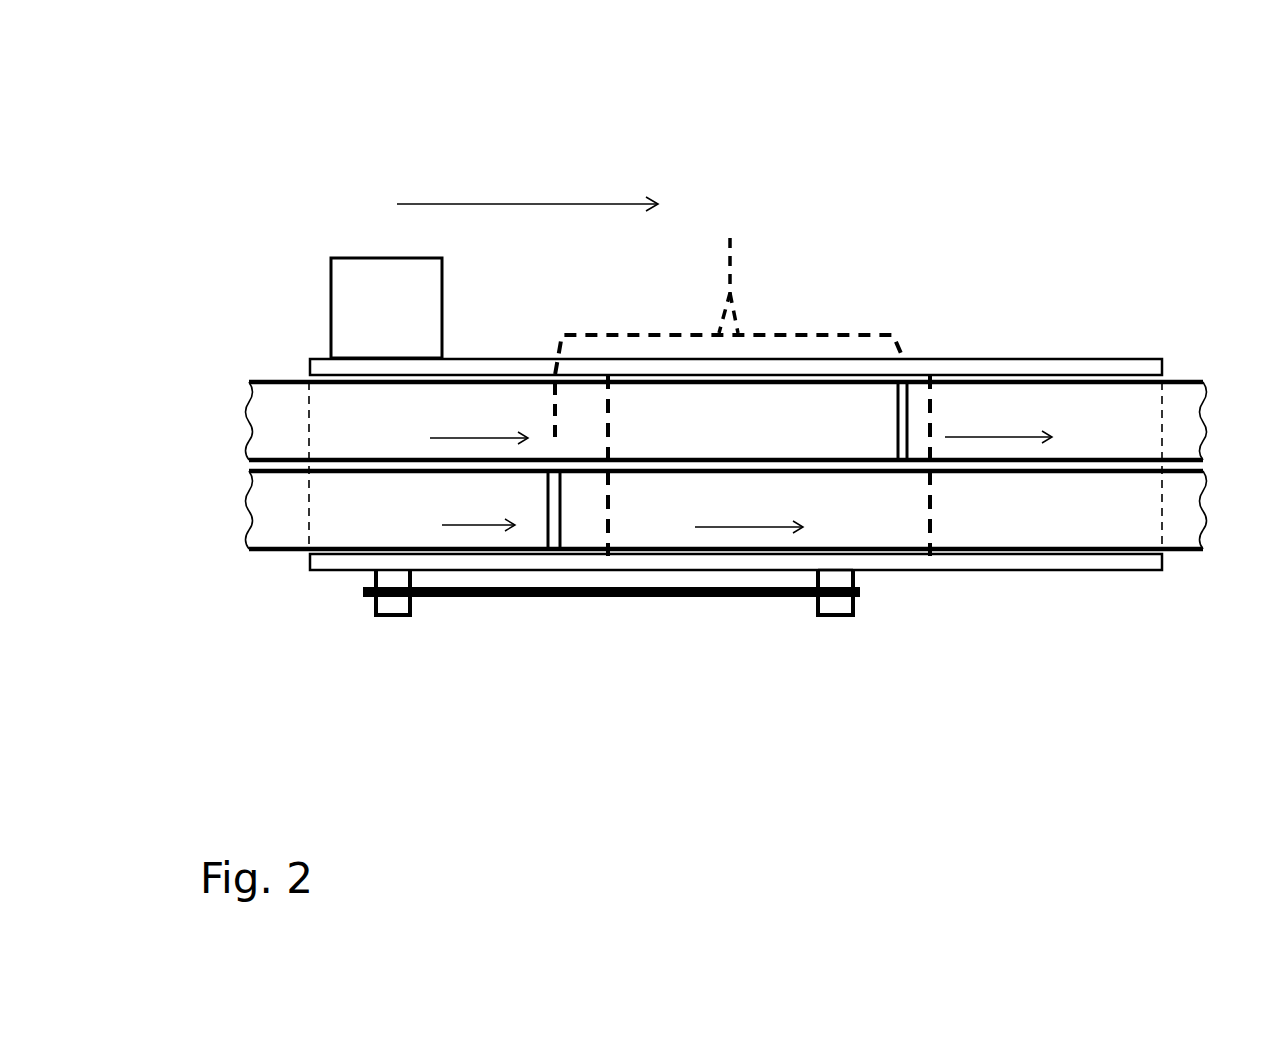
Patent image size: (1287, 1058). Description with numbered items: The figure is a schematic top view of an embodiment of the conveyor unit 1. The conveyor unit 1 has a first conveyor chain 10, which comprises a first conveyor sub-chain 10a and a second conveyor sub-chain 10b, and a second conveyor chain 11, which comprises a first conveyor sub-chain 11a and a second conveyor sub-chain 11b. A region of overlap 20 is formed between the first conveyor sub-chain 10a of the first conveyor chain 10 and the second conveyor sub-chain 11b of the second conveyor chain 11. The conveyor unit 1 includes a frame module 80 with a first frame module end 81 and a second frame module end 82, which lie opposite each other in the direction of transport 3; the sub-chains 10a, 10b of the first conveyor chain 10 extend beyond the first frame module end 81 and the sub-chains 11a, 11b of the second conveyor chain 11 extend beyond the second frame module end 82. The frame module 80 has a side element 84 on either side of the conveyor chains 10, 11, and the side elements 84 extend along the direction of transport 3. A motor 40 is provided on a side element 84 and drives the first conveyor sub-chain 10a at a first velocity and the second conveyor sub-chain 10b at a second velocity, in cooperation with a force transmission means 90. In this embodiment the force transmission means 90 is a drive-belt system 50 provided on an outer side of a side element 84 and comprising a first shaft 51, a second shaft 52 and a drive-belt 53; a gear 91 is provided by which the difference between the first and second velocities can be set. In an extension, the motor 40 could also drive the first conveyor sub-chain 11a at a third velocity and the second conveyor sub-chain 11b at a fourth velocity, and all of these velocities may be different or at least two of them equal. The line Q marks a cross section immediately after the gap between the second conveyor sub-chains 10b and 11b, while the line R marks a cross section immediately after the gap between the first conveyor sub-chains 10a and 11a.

The conveyor unit 1 is at (940, 247).
The direction of transport 3 is at (529, 205).
The region of overlap 20 is at (730, 240).
The motor 40 is at (404, 326).
The side element 84 is at (471, 366).
The first conveyor chain 10 is at (234, 381).
The second conveyor chain 11 is at (1218, 381).
The first conveyor sub-chain of the first conveyor chain 10a is at (826, 440).
The second conveyor sub-chain of the first conveyor chain 10b is at (428, 526).
The first conveyor sub-chain of the second conveyor chain 11a is at (1138, 439).
The second conveyor sub-chain of the second conveyor chain 11b is at (880, 526).
The first frame module end 81 is at (307, 398).
The second frame module end 82 is at (1167, 412).
The line Q is at (611, 523).
The line R is at (933, 523).
The force transmission means 90 is at (665, 661).
The drive-belt system 50 is at (665, 632).
The first shaft 51 is at (392, 607).
The second shaft 52 is at (842, 603).
The drive-belt 53 is at (675, 598).
The gear 91 is at (840, 578).
The frame module 80 is at (1164, 780).